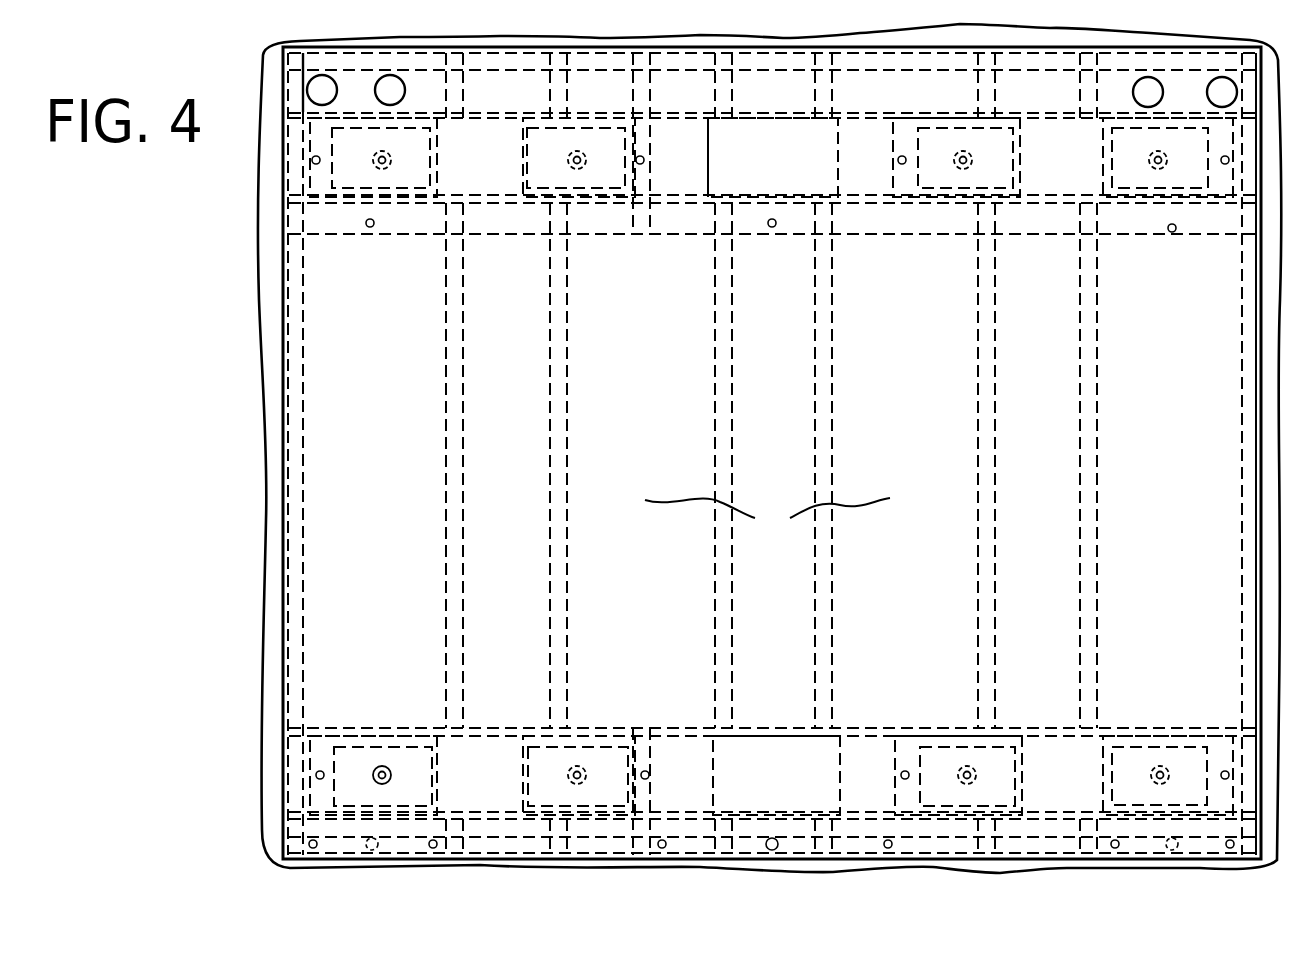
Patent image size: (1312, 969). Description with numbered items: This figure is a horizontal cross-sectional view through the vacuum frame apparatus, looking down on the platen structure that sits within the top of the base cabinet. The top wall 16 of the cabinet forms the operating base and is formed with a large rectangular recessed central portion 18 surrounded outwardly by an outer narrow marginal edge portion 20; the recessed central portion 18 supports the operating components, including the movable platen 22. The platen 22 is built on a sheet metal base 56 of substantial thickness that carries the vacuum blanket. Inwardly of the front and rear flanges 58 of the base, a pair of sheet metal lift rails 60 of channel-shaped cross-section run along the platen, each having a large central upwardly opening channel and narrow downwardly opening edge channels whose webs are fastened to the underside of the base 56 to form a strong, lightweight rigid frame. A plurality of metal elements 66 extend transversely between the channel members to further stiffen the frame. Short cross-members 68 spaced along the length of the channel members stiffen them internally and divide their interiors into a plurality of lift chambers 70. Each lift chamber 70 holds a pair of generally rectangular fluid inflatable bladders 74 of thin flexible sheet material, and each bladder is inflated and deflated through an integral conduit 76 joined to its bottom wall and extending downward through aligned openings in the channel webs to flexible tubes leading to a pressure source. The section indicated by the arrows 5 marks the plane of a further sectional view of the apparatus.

The section line 5- 5 is at (965, 720).
The top wall 16 is at (752, 865).
The recessed central portion 18 is at (284, 547).
The outer narrow marginal edge portion 20 is at (378, 45).
The movable platen 22 is at (280, 480).
The sheet metal base 56 is at (767, 520).
The front and rear flanges 58 is at (688, 118).
The lift rails 60 is at (746, 212).
The metal elements 66 is at (448, 347).
The short cross-members 68 is at (315, 187).
The lift chambers 70 is at (507, 195).
The fluid inflatable bladders 74 is at (770, 467).
The integral conduit 76 is at (568, 160).